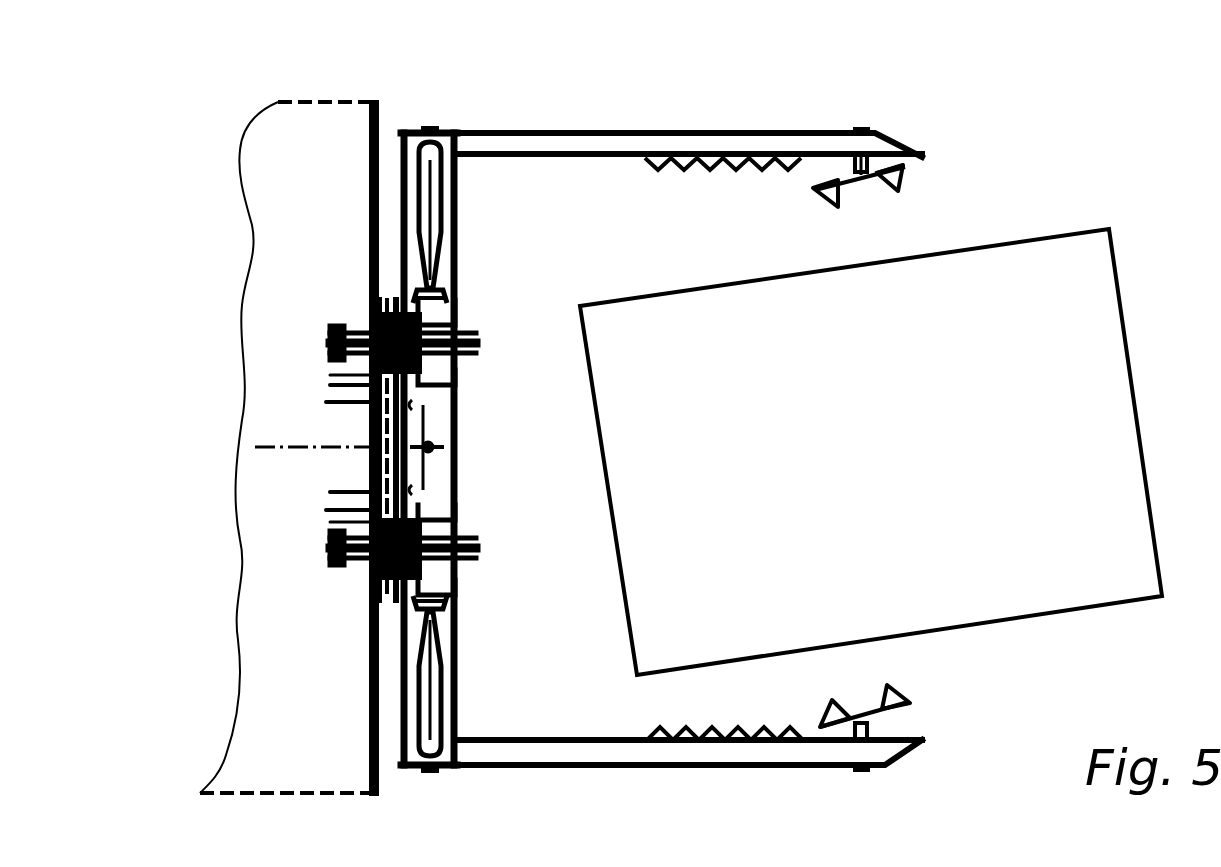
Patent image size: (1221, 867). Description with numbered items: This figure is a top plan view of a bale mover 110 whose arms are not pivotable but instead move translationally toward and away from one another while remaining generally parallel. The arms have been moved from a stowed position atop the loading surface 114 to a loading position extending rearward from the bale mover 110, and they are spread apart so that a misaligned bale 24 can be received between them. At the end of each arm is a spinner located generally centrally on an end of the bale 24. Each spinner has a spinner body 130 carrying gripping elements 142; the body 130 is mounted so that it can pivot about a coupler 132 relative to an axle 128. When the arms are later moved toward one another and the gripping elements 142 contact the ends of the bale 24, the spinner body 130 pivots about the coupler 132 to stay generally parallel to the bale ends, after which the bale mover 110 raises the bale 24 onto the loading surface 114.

The bale mover 110 is at (460, 48).
The loading surface 114 is at (305, 681).
The spinner body 130 is at (870, 156).
The gripping elements 142 is at (903, 185).
The coupler 132 is at (865, 178).
The axle 128 is at (880, 722).
The bale 24 is at (870, 433).